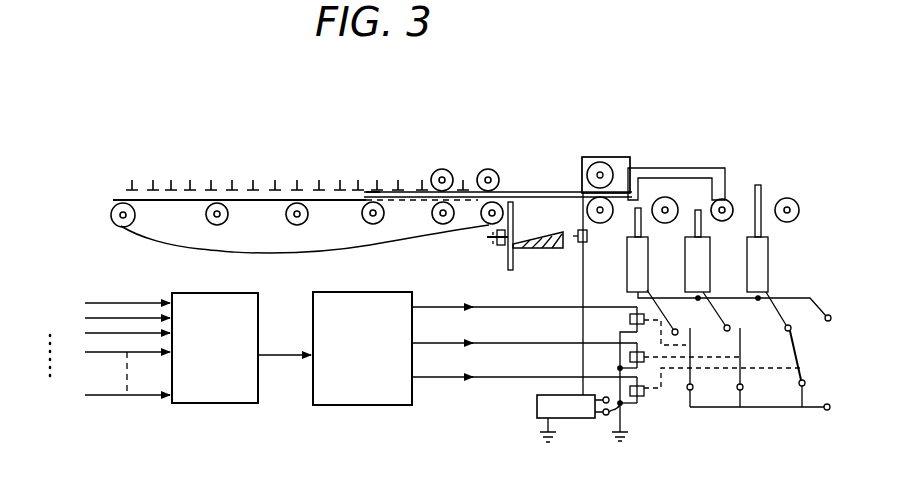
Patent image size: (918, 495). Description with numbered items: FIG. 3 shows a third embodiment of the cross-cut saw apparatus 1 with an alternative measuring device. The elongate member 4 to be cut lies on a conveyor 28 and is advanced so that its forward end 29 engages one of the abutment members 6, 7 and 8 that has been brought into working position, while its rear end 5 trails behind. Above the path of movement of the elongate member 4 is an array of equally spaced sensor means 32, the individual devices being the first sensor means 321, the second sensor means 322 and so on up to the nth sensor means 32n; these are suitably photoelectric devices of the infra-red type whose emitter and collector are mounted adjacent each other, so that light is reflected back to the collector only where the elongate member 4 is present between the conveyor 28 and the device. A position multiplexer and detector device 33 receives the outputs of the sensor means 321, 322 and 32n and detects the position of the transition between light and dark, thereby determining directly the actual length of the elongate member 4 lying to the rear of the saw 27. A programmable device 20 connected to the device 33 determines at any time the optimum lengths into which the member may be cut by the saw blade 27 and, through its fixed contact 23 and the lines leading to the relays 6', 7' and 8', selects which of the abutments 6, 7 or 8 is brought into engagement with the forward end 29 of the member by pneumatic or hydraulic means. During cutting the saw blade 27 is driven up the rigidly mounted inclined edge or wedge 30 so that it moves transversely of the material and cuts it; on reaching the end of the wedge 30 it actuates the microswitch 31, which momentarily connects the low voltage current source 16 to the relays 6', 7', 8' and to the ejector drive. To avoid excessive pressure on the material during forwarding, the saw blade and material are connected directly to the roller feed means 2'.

The cross-cut saw apparatus 1 is at (560, 156).
The roller feed means 2' is at (465, 140).
The elongate member 4 is at (515, 188).
The rear end of the material 5 is at (380, 190).
The abutment 6 is at (622, 250).
The abutment 7 is at (688, 251).
The abutment 8 is at (746, 238).
The relay 6' is at (637, 374).
The relay 7' is at (679, 394).
The relay 8' is at (710, 419).
The low voltage current source 16 is at (577, 414).
The programmable device 20 is at (364, 405).
The fixed contact 23 is at (690, 172).
The saw blade 27 is at (506, 255).
The conveyor 28 is at (257, 202).
The forward end of the material 29 is at (628, 182).
The inclined edge or wedge 30 is at (538, 250).
The microswitch 31 is at (576, 246).
The sensor means 32 is at (280, 154).
The first sensor means 321 is at (128, 187).
The second sensor means 322 is at (152, 187).
The nth sensor means 32n is at (463, 182).
The position multiplexer and detector device 33 is at (217, 405).